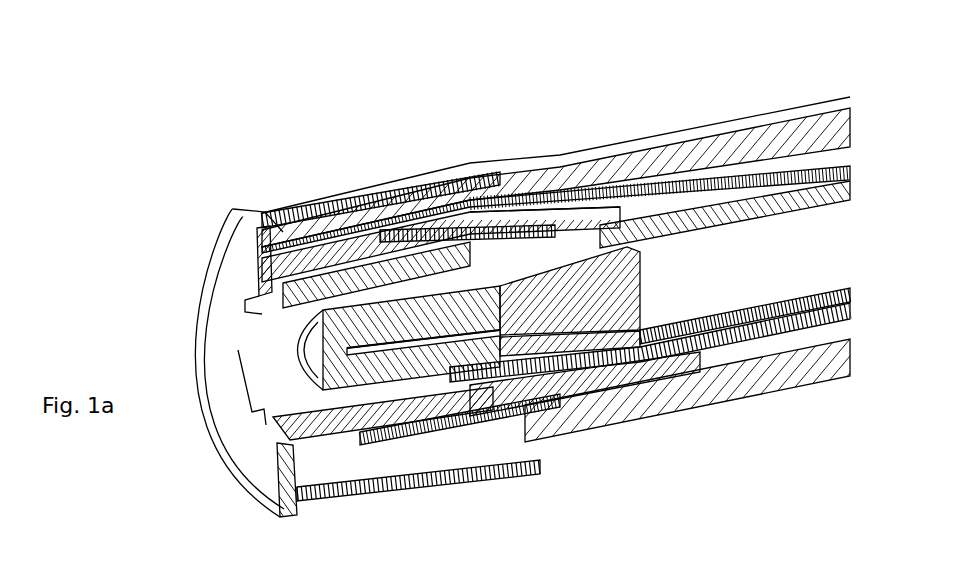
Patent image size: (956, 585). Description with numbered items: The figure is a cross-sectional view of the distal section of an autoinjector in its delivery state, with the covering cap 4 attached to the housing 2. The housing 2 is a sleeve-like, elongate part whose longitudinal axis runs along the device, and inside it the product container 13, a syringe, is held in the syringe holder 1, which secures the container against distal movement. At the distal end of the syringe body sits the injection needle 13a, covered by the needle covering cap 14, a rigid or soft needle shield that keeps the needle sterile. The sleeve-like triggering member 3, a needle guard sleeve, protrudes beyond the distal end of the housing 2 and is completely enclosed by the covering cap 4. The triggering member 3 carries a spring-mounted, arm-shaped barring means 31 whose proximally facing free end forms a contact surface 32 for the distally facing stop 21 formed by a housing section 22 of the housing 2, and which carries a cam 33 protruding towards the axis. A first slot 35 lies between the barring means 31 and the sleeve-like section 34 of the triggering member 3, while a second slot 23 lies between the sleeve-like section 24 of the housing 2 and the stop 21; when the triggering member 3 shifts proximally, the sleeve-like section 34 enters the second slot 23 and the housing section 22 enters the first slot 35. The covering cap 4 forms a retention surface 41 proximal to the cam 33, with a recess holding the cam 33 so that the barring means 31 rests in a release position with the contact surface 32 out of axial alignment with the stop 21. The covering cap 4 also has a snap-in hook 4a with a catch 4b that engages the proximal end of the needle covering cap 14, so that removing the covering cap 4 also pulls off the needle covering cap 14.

The syringe holder 1 is at (808, 335).
The housing 2 is at (659, 414).
The triggering member 3 is at (311, 462).
The covering cap 4 is at (148, 326).
The snap-in hook 4a is at (558, 238).
The catch 4b is at (622, 238).
The product container 13 is at (760, 312).
The injection needle 13a is at (463, 318).
The needle covering cap 14 is at (383, 392).
The stop 21 is at (520, 228).
The housing section 22 is at (596, 212).
The second slot 23 is at (530, 202).
The sleeve-like section 24 is at (597, 420).
The barring means 31 is at (398, 280).
The contact surface 32 is at (443, 257).
The cam 33 is at (385, 272).
The sleeve-like section 34 is at (427, 440).
The first slot 35 is at (413, 277).
The retention surface 41 is at (473, 253).